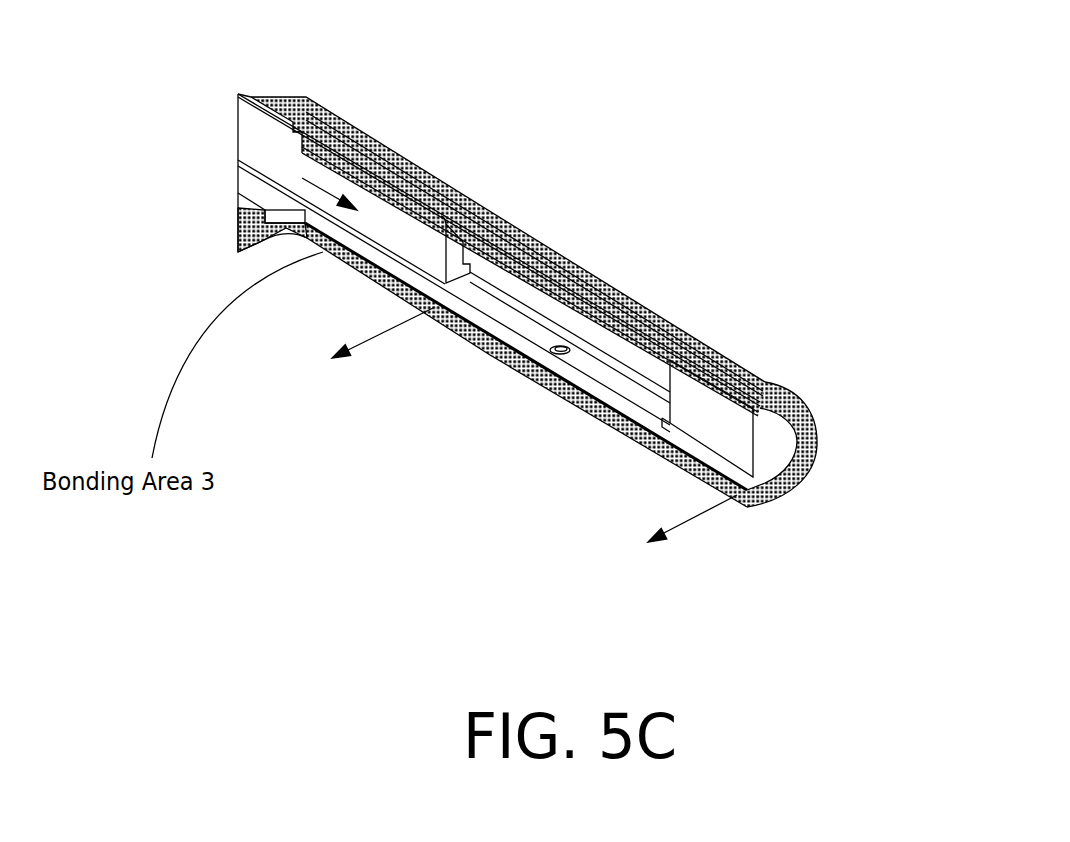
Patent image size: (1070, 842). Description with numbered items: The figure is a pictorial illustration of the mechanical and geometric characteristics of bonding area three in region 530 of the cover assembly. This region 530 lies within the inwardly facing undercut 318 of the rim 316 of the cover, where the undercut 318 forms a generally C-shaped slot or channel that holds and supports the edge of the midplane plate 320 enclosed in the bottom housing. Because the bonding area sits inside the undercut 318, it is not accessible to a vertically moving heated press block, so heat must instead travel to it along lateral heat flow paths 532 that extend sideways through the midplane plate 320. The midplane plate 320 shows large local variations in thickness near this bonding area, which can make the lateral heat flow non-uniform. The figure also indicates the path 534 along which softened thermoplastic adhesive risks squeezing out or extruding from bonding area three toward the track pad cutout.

The region 530 is at (645, 353).
The midplane plate 320 is at (238, 94).
The heat flow paths 532 is at (327, 187).
The path 534 is at (397, 327).
The rim 316 is at (747, 367).
The undercut 318 is at (810, 452).